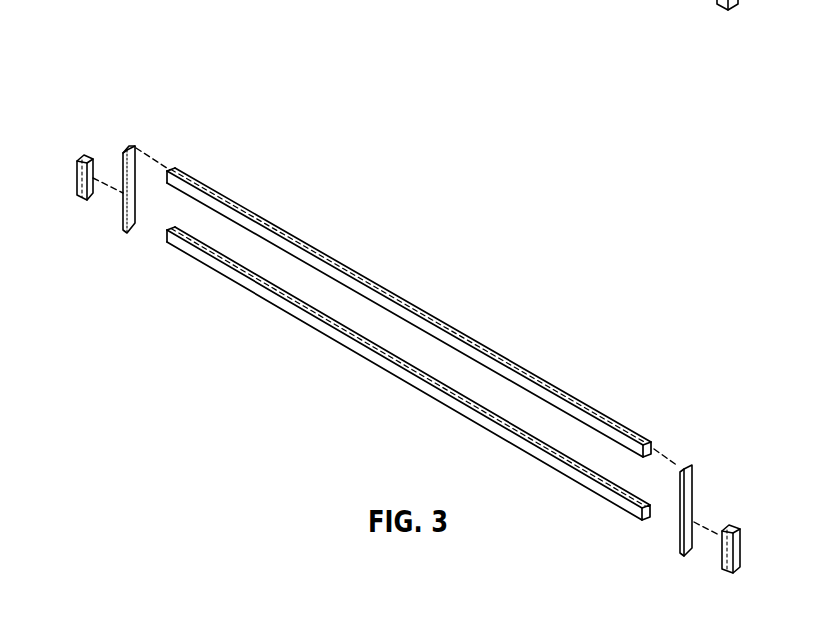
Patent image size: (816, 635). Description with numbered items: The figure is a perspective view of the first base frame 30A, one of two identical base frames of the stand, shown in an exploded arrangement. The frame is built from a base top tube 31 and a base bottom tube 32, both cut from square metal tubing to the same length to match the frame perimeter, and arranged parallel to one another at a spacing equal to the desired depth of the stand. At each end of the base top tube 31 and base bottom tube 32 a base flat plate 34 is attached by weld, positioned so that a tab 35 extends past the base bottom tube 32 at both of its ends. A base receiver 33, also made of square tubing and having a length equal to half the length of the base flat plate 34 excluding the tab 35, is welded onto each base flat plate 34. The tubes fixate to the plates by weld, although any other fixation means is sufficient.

The first base frame 30A is at (171, 344).
The base top tube 31 is at (409, 312).
The base bottom tube 32 is at (352, 368).
The base receiver 33 is at (83, 157).
The base flat plate 34 is at (133, 143).
The tab 35 is at (115, 233).